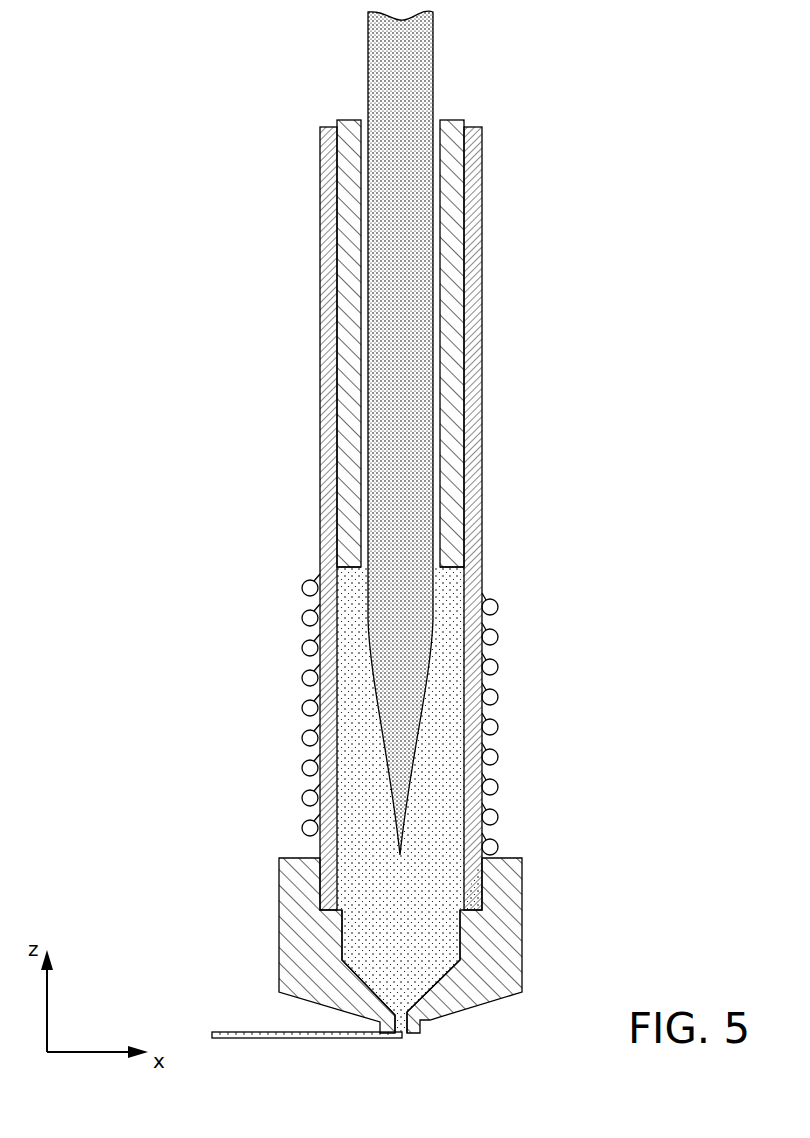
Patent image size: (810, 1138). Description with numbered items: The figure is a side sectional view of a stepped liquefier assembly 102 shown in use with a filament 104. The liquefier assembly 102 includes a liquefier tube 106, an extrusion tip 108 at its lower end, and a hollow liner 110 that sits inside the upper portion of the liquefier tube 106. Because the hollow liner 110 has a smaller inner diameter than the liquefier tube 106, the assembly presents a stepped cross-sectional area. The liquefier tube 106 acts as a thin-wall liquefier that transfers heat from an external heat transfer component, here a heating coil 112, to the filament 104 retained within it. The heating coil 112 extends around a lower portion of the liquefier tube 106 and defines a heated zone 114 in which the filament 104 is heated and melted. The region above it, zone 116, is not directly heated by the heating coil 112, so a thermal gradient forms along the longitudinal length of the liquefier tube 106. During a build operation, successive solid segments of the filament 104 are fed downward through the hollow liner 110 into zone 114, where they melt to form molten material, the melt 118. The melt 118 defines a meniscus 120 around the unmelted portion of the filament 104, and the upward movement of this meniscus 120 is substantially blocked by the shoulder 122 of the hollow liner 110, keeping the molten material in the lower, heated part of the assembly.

The liquefier assembly 102 is at (423, 522).
The filament 104 is at (425, 50).
The liquefier tube 106 is at (473, 250).
The extrusion tip 108 is at (290, 925).
The hollow liner 110 is at (457, 358).
The heating coil 112 is at (312, 712).
The zone 114 is at (157, 720).
The zone 116 is at (160, 339).
The melt 118 is at (447, 805).
The meniscus 120 is at (362, 558).
The shoulder 122 is at (337, 578).